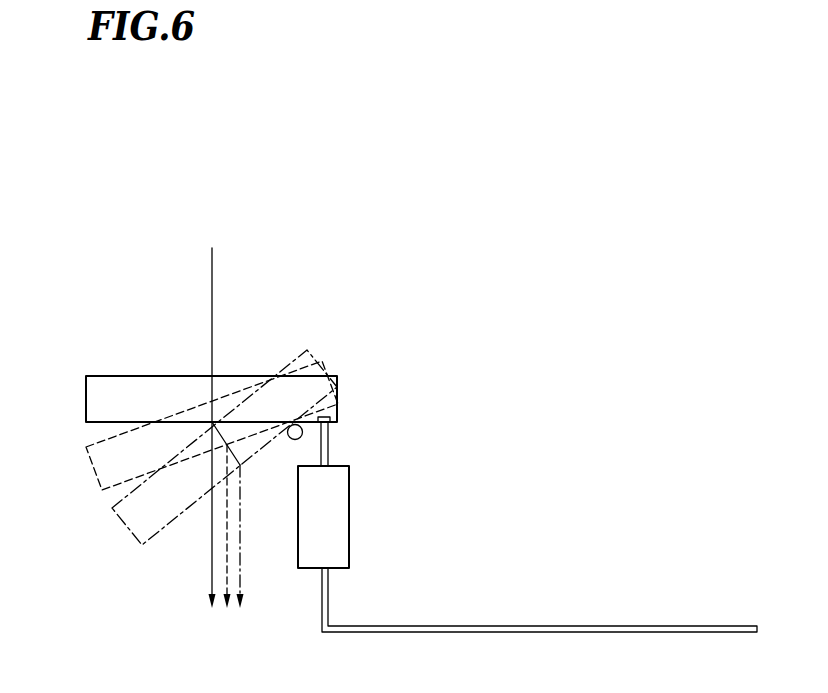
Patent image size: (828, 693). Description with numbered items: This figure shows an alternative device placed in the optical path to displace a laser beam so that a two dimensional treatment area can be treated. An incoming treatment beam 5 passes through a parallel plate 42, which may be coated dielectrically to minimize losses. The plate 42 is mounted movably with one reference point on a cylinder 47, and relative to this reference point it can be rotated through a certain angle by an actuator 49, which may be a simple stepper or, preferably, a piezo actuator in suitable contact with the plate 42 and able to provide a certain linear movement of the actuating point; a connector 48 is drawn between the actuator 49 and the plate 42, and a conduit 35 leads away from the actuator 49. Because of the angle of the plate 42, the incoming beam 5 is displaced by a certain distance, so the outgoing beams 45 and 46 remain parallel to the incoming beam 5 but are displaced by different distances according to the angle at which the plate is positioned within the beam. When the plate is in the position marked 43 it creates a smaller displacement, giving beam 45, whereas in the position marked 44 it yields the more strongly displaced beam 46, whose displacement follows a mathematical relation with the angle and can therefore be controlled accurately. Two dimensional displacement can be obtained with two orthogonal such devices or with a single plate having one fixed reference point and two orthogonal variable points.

The incoming treatment beam 5 is at (212, 296).
The conduit 35 is at (553, 626).
The parallel plate 42 is at (86, 392).
The plate position 43 is at (78, 478).
The plate position 44 is at (120, 517).
The outgoing beam 45 is at (226, 583).
The displaced beam 46 is at (250, 584).
The cylinder 47 is at (293, 440).
The connector 48 is at (337, 401).
The actuator 49 is at (349, 498).